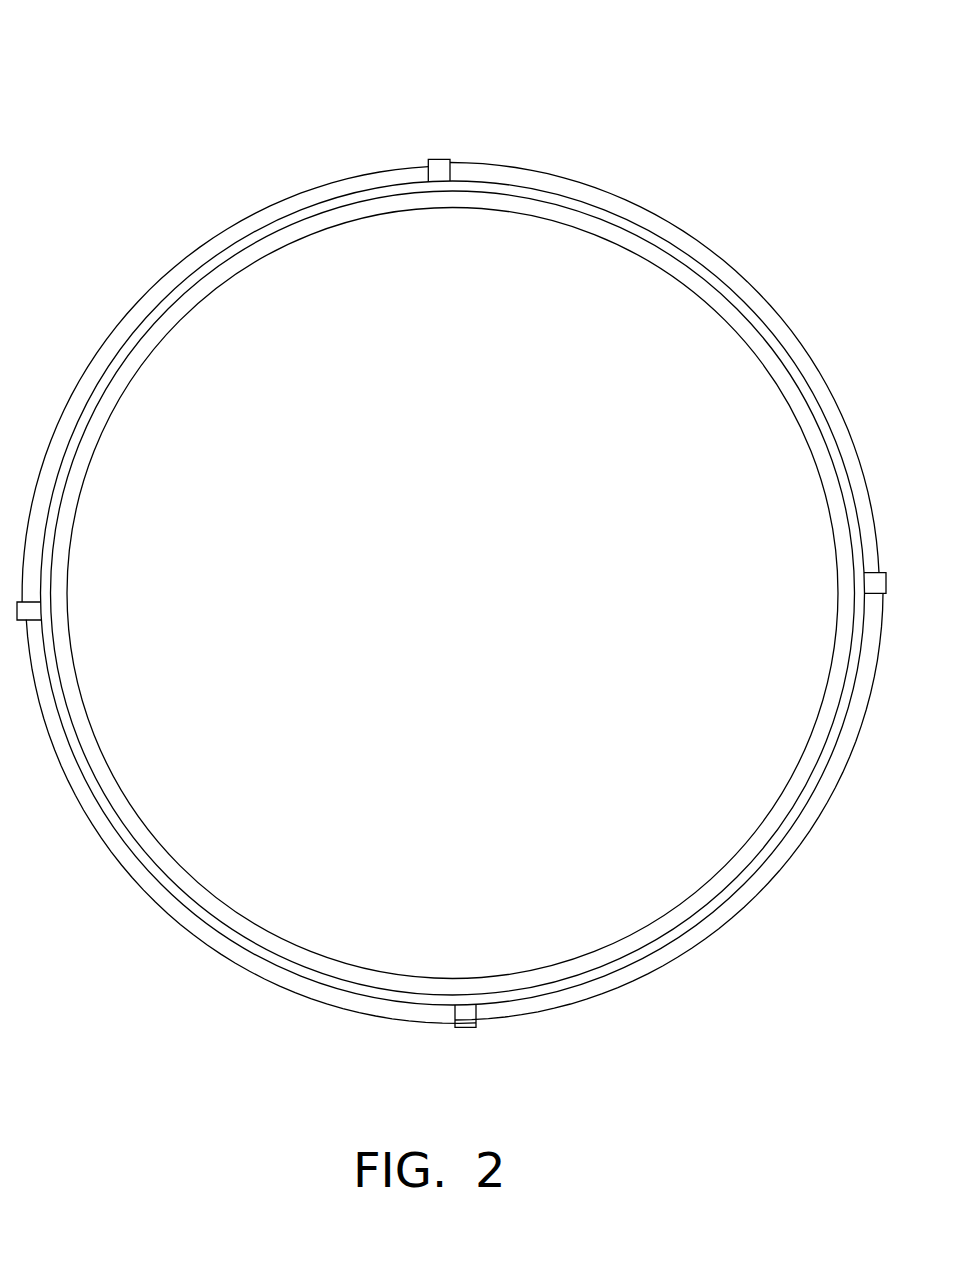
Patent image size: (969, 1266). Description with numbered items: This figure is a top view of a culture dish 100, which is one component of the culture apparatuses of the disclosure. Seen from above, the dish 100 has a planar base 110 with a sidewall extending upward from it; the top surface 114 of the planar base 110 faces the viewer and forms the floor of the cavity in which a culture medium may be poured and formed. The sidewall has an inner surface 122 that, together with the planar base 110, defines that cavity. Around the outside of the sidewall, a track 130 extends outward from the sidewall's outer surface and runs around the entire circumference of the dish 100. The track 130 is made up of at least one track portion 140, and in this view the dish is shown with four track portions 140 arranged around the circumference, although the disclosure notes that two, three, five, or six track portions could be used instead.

The culture dish 100 is at (76, 29).
The planar base 110 is at (398, 466).
The top surface 114 is at (507, 547).
The inner surface 122 is at (718, 313).
The track 130 is at (446, 575).
The track portion 140 is at (653, 215).